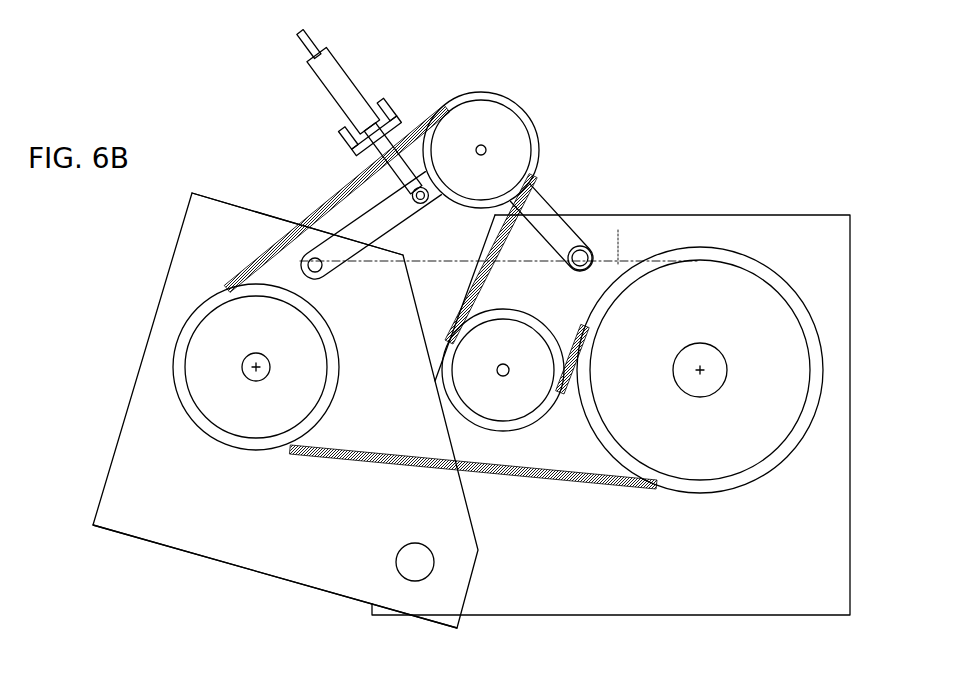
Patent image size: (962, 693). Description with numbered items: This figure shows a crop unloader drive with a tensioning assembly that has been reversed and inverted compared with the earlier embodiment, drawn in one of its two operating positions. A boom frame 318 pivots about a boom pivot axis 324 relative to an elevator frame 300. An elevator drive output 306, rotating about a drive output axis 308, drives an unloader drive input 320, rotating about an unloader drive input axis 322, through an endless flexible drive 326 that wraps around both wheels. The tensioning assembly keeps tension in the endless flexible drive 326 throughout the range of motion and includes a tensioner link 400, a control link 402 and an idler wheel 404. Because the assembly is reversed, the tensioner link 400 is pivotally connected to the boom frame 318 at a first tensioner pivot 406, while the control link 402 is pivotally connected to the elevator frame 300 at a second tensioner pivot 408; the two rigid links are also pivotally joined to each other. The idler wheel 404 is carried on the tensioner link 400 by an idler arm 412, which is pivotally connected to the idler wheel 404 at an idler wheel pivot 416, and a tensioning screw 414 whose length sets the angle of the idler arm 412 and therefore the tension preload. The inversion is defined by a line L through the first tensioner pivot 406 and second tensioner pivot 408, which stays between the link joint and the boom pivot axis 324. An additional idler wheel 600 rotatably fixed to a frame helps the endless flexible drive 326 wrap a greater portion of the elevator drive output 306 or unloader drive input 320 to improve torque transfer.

The elevator frame 300 is at (537, 568).
The elevator drive output 306 is at (760, 337).
The drive output axis 308 is at (705, 372).
The boom frame 318 is at (267, 528).
The unloader drive input 320 is at (173, 422).
The unloader drive input axis 322 is at (252, 366).
The boom pivot axis 324 is at (417, 563).
The endless flexible drive 326 is at (362, 457).
The tensioner link 400 is at (322, 212).
The control link 402 is at (540, 195).
The idler wheel 404 is at (497, 113).
The first tensioner pivot 406 is at (320, 232).
The second tensioner pivot 408 is at (583, 243).
The idler arm 412 is at (345, 212).
The tensioning screw 414 is at (345, 158).
The idler wheel pivot 416 is at (478, 147).
The additional idler wheel 600 is at (523, 387).
The line L is at (618, 230).